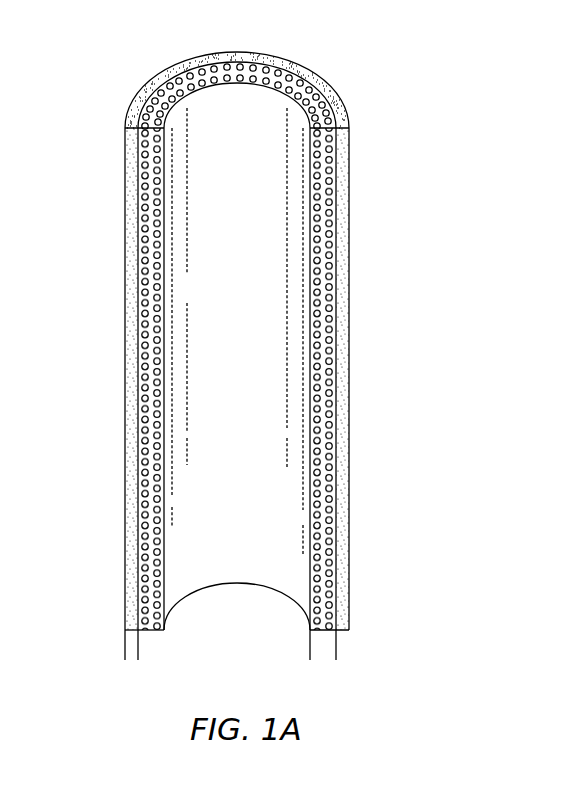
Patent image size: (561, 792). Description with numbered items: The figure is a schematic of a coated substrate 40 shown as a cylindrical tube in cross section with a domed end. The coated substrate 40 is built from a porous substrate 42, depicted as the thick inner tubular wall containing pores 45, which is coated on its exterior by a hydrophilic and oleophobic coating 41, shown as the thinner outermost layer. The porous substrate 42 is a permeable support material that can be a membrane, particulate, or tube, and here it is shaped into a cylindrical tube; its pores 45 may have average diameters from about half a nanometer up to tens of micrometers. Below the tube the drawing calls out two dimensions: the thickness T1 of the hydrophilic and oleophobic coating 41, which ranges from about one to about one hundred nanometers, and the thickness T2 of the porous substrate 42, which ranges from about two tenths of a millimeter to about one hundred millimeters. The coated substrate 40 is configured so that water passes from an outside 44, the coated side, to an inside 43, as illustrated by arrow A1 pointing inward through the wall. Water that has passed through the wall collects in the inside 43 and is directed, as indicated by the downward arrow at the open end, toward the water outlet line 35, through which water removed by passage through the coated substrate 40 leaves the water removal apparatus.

The coated substrate 40 is at (348, 26).
The hydrophilic and oleophobic coating 41 is at (349, 360).
The porous substrate 42 is at (152, 547).
The inside 43 is at (228, 109).
The outside 44 is at (401, 276).
The pores 45 is at (335, 457).
The arrow A1 is at (184, 288).
The thickness of the hydrophilic and oleophobic coating T1 is at (173, 647).
The thickness of the porous substrate T2 is at (380, 647).
The water outlet line 35 is at (237, 598).